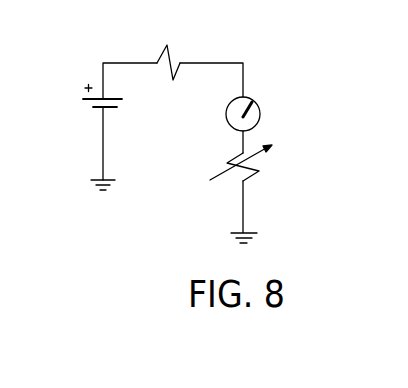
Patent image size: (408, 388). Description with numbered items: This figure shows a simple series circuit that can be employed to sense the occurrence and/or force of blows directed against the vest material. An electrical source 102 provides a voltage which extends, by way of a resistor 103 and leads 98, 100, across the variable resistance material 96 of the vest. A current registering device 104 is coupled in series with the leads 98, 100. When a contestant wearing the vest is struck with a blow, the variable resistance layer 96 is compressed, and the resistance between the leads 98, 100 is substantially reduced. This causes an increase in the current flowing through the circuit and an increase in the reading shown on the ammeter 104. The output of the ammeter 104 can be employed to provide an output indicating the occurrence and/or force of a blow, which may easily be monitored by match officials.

The variable resistance material 96 is at (259, 171).
The lead 98 is at (242, 145).
The lead 100 is at (243, 218).
The electrical source 102 is at (93, 100).
The resistor 103 is at (172, 53).
The current registering device 104 is at (260, 112).